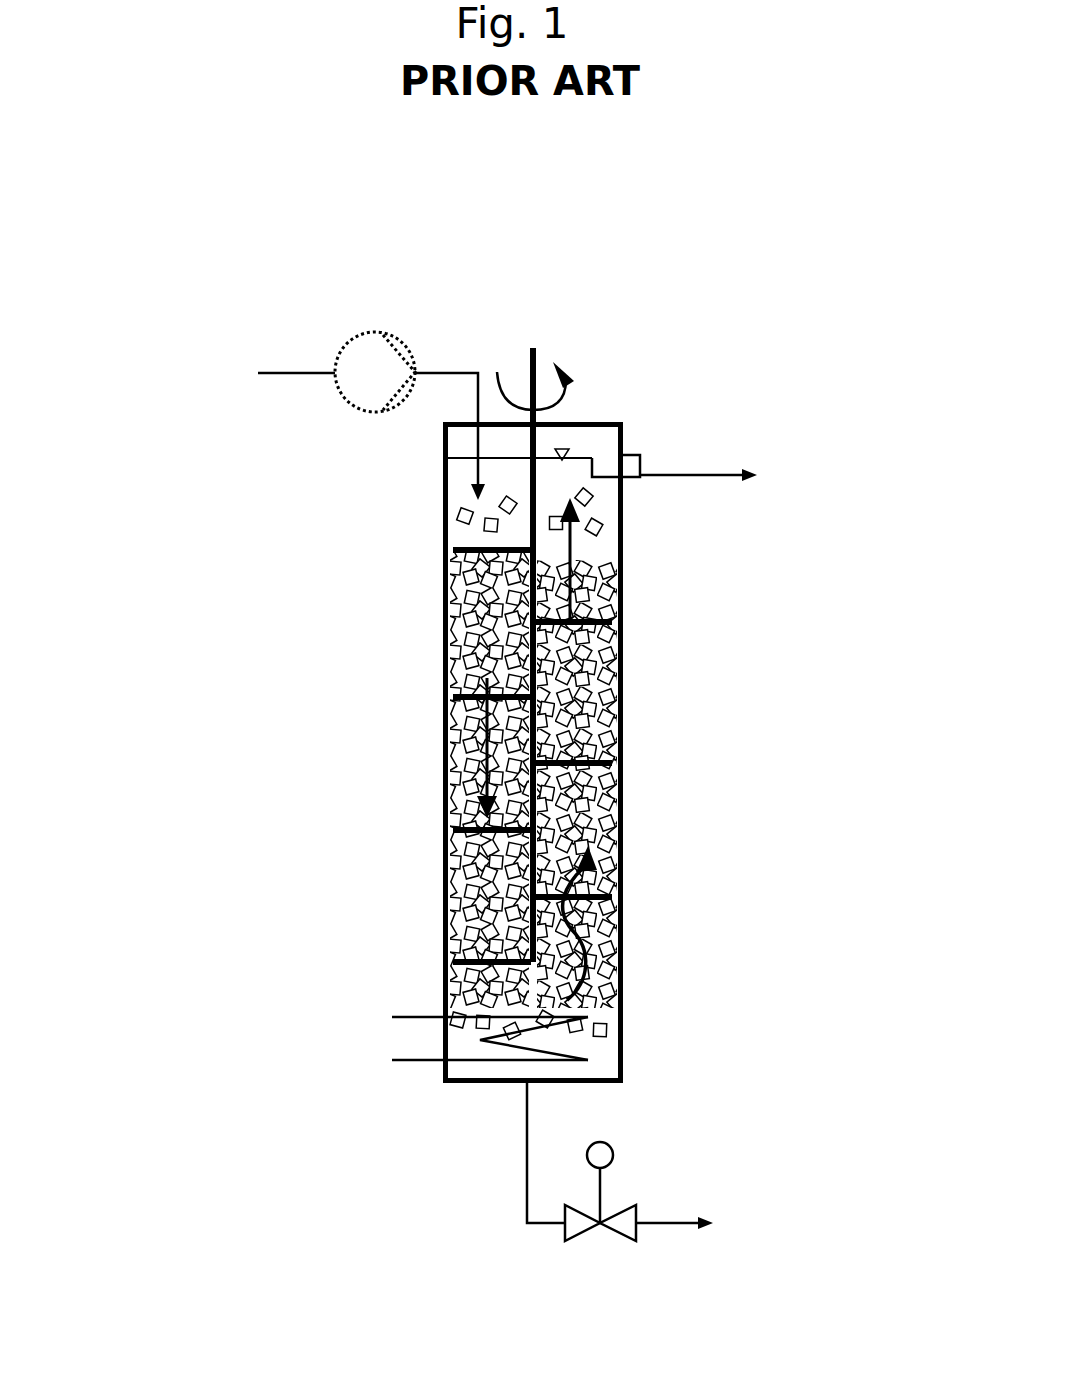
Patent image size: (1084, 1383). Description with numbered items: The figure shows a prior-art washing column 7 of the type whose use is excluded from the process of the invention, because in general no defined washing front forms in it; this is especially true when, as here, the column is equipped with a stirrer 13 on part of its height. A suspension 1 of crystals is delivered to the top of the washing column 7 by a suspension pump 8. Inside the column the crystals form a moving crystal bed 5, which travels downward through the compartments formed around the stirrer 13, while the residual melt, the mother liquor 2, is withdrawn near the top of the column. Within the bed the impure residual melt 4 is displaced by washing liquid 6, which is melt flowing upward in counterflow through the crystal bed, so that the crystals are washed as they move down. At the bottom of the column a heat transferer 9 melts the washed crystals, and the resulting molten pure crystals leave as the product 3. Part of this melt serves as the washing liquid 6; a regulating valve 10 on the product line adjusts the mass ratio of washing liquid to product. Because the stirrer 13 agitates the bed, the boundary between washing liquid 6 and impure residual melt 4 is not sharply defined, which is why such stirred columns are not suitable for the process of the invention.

The suspension 1 is at (280, 373).
The residual melt (mother liquor) 2 is at (693, 473).
The product (molten pure crystals) 3 is at (638, 1166).
The impure residual melt 4 is at (612, 590).
The moving crystal bed 5 is at (455, 748).
The washing liquid (melt) 6 is at (615, 860).
The washing column 7 is at (445, 607).
The suspension pump 8 is at (372, 360).
The heat transferer to melt the crystals 9 is at (427, 1060).
The regulating valve to adjust the mass ratio of washing liquid (melt)/product 10 is at (623, 1224).
The stirrer 13 is at (530, 520).